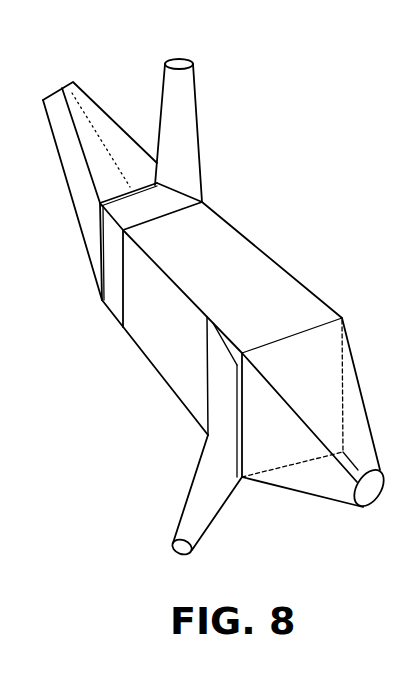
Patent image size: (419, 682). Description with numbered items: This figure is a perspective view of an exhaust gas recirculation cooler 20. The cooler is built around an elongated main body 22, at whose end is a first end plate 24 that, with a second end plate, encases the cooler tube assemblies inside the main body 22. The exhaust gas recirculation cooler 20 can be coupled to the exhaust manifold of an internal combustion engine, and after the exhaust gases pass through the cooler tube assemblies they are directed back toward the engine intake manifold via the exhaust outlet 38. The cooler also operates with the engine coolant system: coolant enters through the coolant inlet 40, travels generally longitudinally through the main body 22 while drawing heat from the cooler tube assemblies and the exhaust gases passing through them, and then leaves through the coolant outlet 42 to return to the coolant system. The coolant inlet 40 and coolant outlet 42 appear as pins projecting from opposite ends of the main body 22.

The exhaust gas recirculation cooler 20 is at (231, 174).
The main body 22 is at (227, 268).
The first end plate 24 is at (418, 172).
The exhaust outlet 38 is at (109, 126).
The coolant inlet 40 is at (181, 93).
The coolant outlet 42 is at (203, 510).